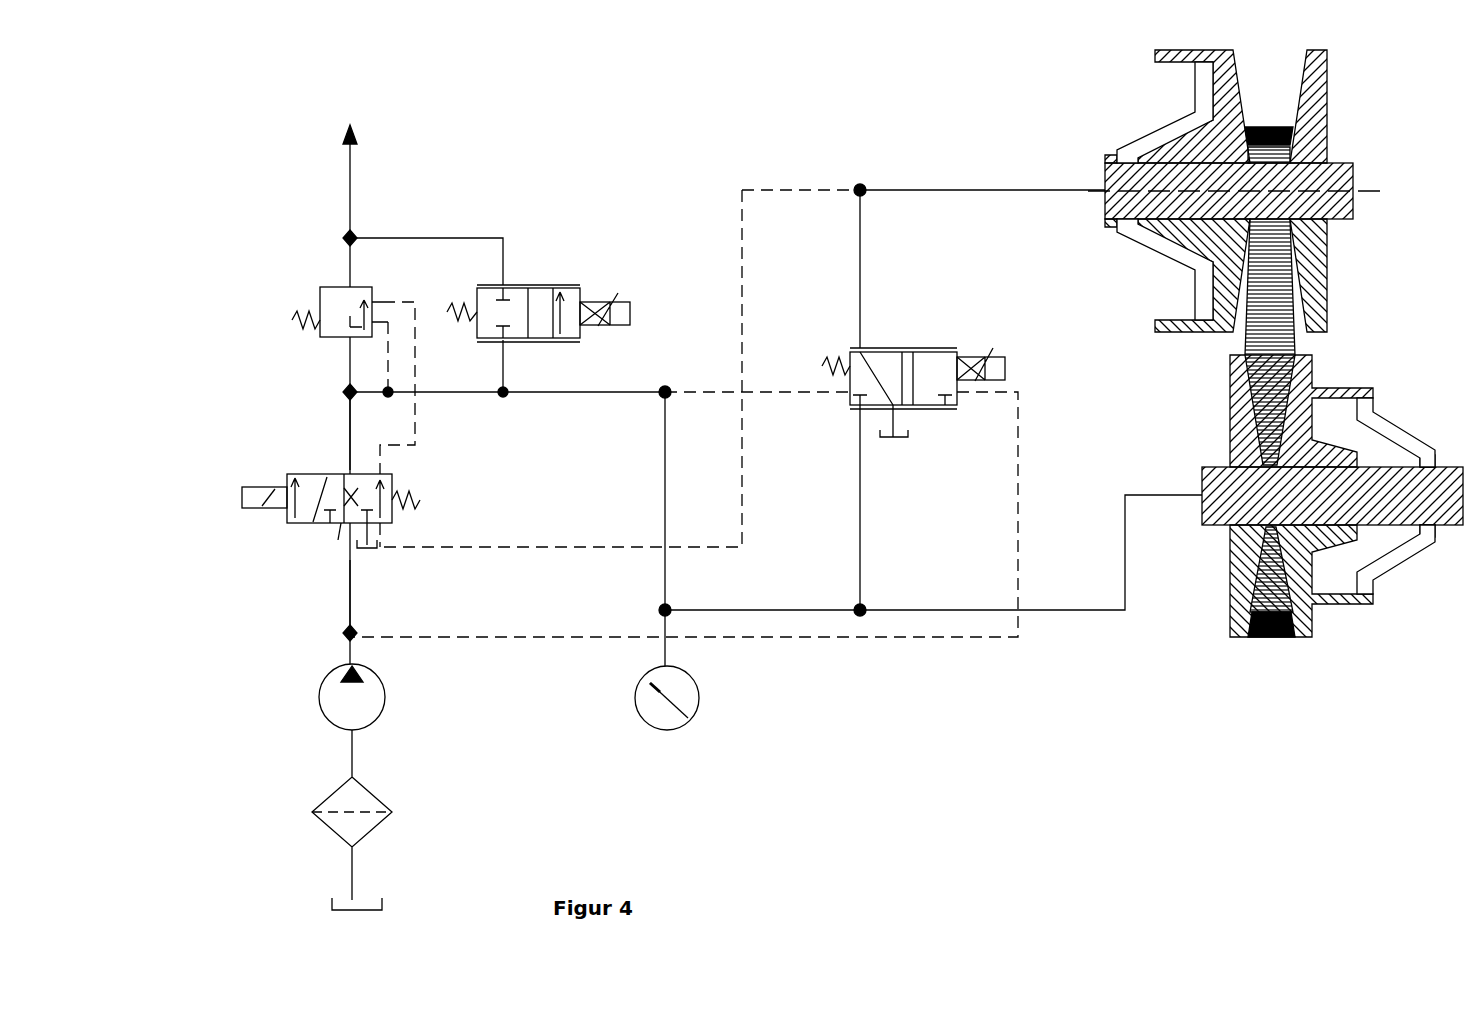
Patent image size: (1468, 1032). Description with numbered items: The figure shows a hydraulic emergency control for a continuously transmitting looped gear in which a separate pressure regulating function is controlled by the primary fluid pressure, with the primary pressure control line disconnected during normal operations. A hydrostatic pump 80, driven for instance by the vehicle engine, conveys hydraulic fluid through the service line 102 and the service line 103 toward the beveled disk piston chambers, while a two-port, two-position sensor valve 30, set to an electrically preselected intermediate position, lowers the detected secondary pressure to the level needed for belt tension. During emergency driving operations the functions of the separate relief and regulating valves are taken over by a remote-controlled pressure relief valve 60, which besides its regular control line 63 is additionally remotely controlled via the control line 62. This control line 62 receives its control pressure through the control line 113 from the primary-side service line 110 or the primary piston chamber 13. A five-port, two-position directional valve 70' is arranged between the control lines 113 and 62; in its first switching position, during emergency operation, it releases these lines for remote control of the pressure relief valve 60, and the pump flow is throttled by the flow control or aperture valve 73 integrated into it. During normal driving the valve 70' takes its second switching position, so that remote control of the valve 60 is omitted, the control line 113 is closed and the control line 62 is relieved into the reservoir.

The piston chamber 13 is at (1203, 118).
The sensor valve 30 is at (545, 300).
The pressure relief valve 60 is at (333, 298).
The control line 62 is at (395, 302).
The control line 63 is at (388, 362).
The 5/2-way valve 70' is at (286, 502).
The flow control valve 73 is at (338, 540).
The hydrostatic pump 80 is at (335, 697).
The service line 102 is at (350, 612).
The service line 103 is at (350, 425).
The primary-side service line 110 is at (885, 190).
The control line 113 is at (742, 190).